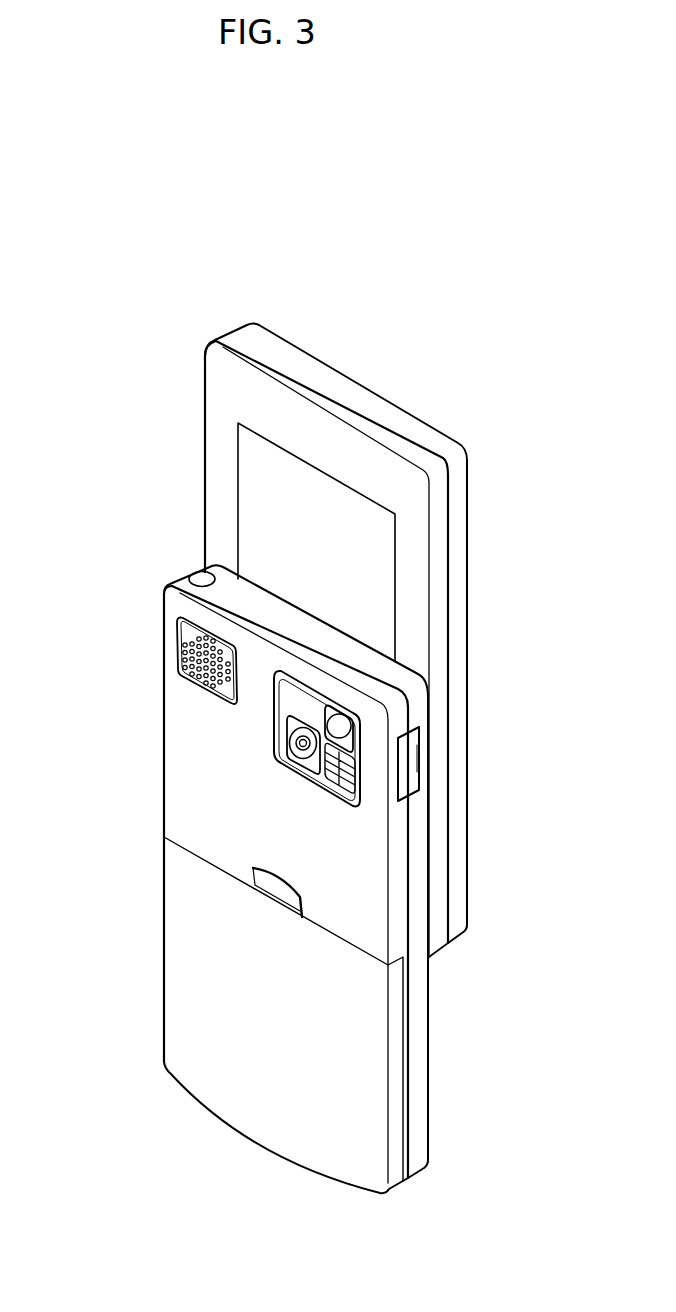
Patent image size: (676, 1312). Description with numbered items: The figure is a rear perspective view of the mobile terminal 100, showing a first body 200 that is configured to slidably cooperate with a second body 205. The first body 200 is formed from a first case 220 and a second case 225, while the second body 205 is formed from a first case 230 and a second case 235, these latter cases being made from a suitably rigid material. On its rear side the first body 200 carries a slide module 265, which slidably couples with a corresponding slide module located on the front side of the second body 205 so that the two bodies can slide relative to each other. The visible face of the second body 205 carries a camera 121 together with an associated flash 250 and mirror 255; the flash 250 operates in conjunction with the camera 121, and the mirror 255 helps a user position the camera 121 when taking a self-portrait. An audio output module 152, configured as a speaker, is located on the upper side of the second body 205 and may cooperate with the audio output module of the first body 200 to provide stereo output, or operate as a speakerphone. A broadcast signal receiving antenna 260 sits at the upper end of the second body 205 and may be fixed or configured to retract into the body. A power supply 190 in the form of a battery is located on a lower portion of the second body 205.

The mobile terminal 100 is at (455, 354).
The first body 200 is at (170, 457).
The second body 205 is at (142, 751).
The first case 220 is at (247, 333).
The second case 225 is at (229, 347).
The first case 230 is at (420, 980).
The second case 235 is at (398, 925).
The slide module 265 is at (240, 528).
The broadcast signal receiving antenna 260 is at (192, 577).
The audio output module 152 is at (183, 655).
The flash 250 is at (360, 787).
The camera 121 is at (303, 743).
The mirror 255 is at (341, 724).
The power supply 190 is at (178, 919).